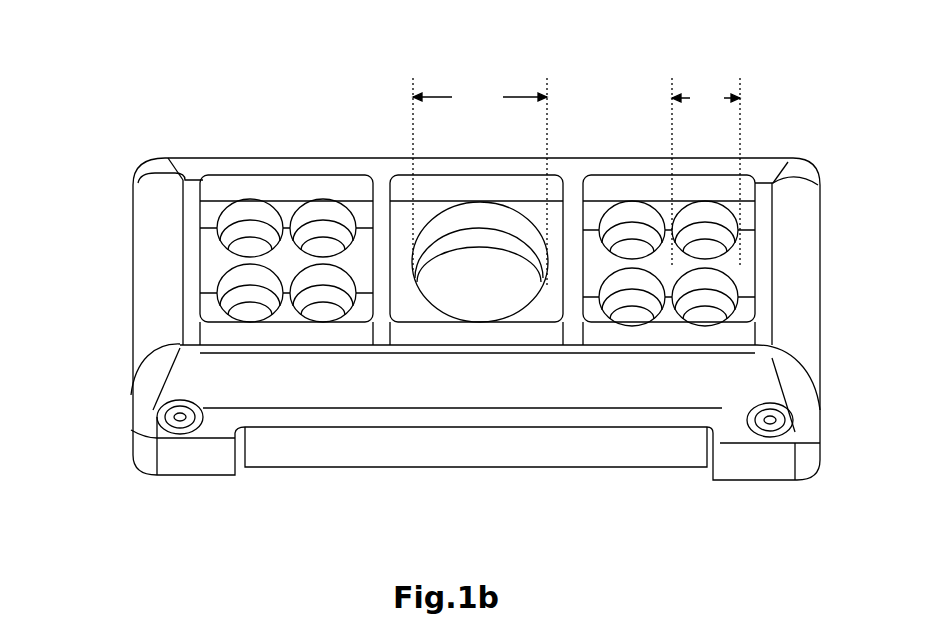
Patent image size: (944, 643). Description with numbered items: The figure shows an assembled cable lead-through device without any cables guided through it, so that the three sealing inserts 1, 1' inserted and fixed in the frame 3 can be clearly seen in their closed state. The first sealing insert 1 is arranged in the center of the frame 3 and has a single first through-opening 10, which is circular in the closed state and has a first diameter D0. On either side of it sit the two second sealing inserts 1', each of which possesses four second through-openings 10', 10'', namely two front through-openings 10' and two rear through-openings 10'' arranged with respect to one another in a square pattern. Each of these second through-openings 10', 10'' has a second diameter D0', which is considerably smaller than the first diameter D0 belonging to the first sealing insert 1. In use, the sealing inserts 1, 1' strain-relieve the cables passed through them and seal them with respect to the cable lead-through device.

The frame 3 is at (91, 202).
The first sealing insert 1 is at (492, 197).
The second sealing insert 1' is at (488, 195).
The first through-opening 10 is at (480, 362).
The front second through-opening 10' is at (477, 404).
The rear second through-opening 10'' is at (477, 158).
The first diameter D0 is at (480, 181).
The second diameter D0' is at (706, 173).